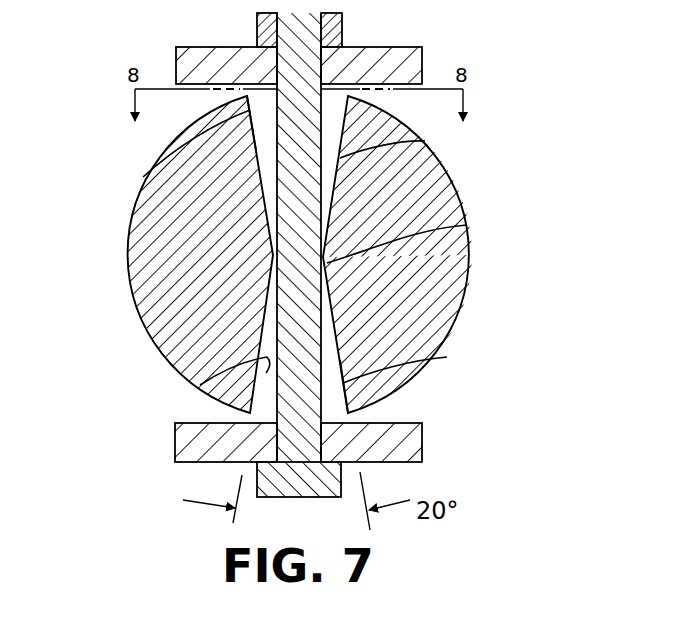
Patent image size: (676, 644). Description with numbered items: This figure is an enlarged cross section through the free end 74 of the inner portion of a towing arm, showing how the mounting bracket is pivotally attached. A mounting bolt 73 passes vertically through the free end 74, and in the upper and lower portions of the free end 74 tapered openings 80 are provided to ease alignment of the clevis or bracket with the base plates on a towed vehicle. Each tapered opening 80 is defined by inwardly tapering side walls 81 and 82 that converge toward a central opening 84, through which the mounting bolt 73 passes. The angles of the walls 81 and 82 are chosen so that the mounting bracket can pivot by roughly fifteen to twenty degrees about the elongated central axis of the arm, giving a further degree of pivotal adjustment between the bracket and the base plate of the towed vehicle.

The bolt 73 is at (318, 490).
The free end 74 is at (143, 310).
The tapered opening 80 is at (245, 98).
The inwardly tapering side wall 81 is at (150, 178).
The inwardly tapering side wall 82 is at (425, 141).
The central opening 84 is at (467, 225).